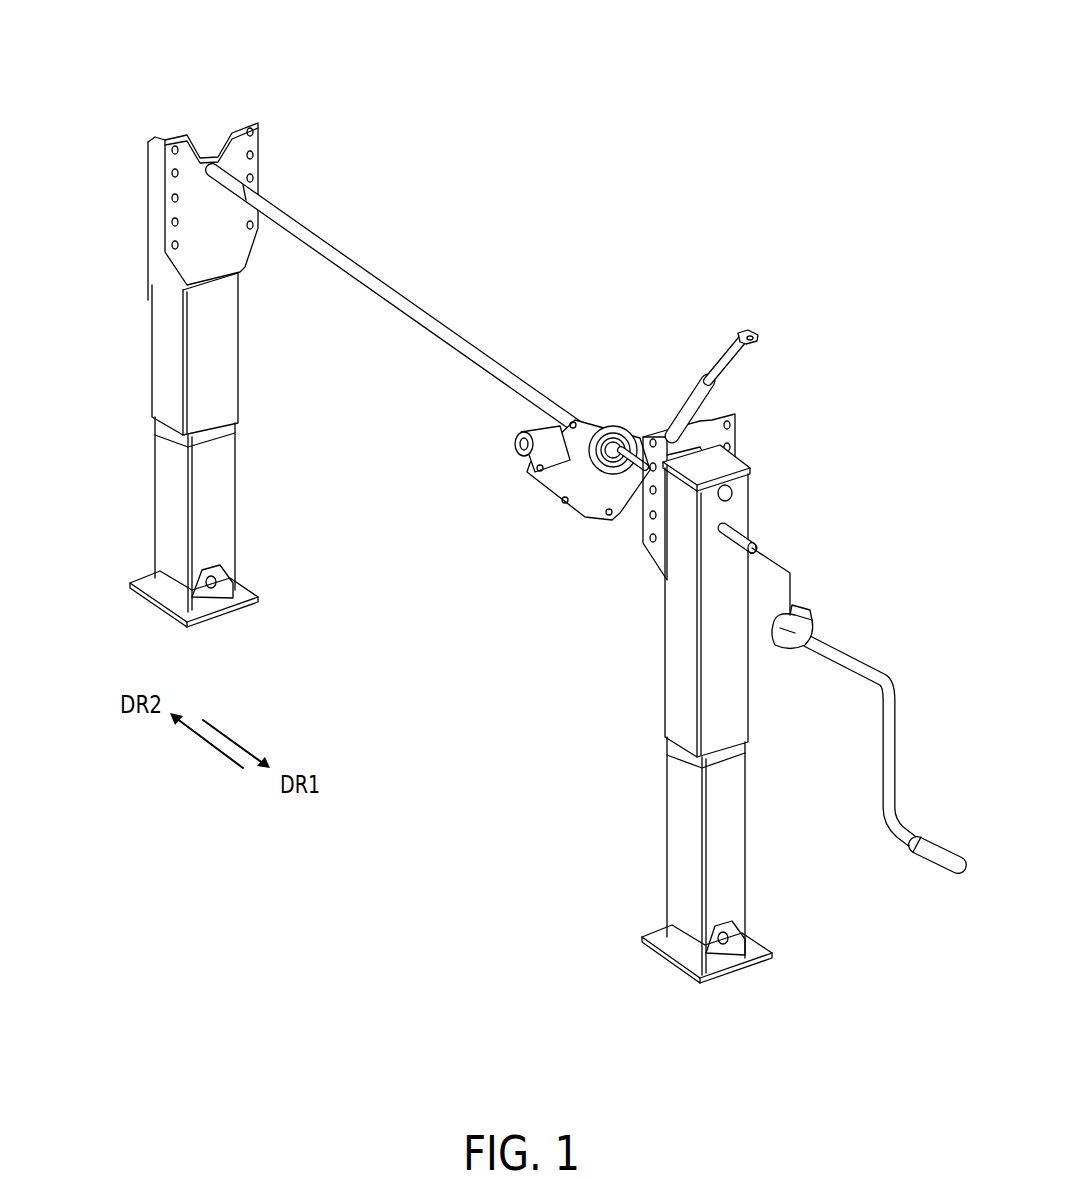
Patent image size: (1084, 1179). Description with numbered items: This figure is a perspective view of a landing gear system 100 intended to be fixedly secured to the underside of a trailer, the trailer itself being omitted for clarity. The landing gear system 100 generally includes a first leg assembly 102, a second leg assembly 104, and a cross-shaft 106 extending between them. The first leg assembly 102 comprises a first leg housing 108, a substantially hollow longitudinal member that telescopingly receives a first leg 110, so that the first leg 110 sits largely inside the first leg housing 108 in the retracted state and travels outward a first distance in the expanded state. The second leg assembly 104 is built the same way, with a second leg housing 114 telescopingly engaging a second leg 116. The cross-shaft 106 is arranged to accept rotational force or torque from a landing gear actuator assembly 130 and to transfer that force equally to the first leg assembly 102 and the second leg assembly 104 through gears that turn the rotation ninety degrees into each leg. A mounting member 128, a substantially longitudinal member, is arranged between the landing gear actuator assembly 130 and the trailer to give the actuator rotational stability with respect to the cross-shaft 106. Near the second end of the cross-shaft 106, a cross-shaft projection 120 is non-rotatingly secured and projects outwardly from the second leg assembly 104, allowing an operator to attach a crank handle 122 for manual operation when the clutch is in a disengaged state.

The landing gear system 100 is at (608, 215).
The first leg assembly 102 is at (230, 110).
The second leg assembly 104 is at (766, 435).
The cross-shaft 106 is at (345, 253).
The first leg housing 108 is at (150, 325).
The first leg 110 is at (150, 500).
The second leg housing 114 is at (665, 663).
The second leg 116 is at (665, 837).
The cross-shaft projection 120 is at (750, 540).
The crank handle 122 is at (826, 637).
The mounting member 128 is at (757, 337).
The landing gear actuator assembly 130 is at (528, 502).